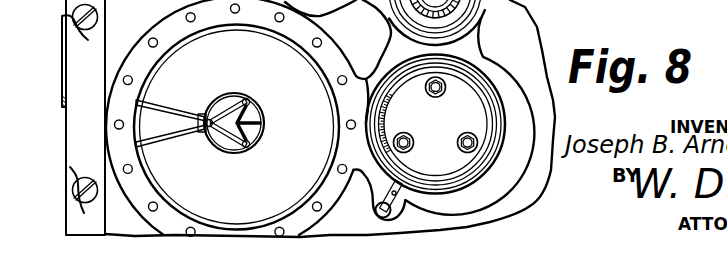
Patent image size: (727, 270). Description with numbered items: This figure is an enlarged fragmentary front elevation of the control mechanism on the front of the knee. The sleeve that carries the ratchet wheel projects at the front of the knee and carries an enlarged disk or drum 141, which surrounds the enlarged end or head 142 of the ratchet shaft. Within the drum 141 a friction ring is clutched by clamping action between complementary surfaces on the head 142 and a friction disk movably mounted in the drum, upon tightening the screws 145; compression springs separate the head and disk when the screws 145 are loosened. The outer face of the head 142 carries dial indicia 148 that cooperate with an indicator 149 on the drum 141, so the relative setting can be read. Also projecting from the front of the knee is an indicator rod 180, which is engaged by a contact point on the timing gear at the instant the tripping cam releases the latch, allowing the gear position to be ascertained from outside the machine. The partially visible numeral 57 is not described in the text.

The drum 141 is at (472, 180).
The head 142 is at (470, 125).
The screws 145 is at (445, 88).
The dial indicia 148 is at (384, 103).
The indicator 149 is at (386, 93).
The indicator rod 180 is at (390, 213).
The housing 57 is at (566, 4).